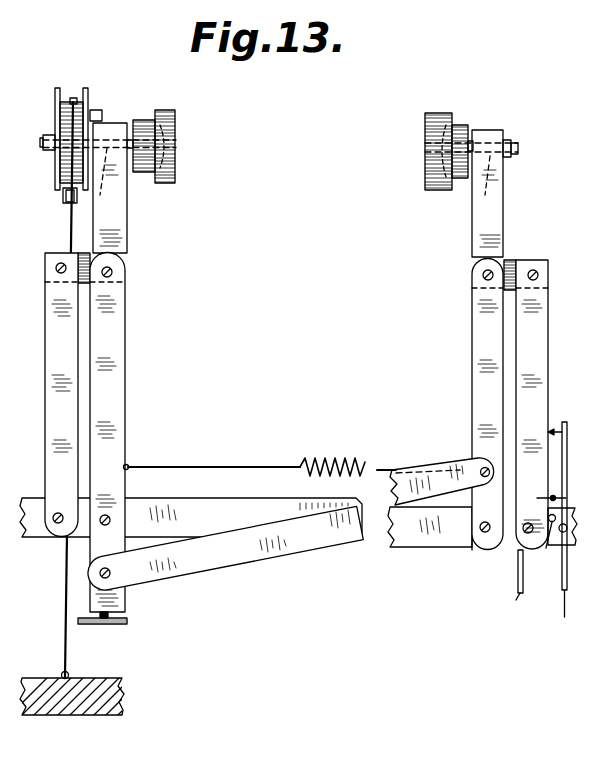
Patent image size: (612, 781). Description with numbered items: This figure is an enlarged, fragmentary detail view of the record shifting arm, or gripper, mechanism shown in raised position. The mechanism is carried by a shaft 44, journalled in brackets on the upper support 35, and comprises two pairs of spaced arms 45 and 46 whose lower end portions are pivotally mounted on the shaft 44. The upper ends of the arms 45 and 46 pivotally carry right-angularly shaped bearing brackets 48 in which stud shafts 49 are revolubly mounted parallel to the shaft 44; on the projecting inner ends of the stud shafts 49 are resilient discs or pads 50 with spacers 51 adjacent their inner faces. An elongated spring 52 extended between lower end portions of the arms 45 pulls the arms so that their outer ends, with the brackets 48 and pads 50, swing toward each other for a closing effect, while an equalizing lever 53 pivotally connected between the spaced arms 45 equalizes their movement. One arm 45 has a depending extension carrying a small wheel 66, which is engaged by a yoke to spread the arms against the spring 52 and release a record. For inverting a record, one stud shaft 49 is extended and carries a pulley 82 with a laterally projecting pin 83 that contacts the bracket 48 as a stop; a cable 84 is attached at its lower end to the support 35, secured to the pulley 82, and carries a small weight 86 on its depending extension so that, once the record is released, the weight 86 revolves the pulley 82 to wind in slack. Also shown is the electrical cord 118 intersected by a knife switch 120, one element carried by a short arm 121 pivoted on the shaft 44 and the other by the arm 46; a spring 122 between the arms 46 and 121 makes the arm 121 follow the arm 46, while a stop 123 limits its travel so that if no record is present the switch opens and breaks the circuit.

The upper support 35 is at (84, 705).
The shaft 44 is at (268, 508).
The gripper arm 45 is at (118, 390).
The gripper arm 46 is at (45, 426).
The bearing bracket 48 is at (122, 210).
The stud shaft 49 is at (299, 181).
The resilient disc or pad 50 is at (170, 112).
The spacer 51 is at (143, 121).
The spring 52 is at (353, 462).
The equalizing lever 53 is at (313, 546).
The small wheel 66 is at (120, 624).
The pulley 82 is at (58, 104).
The pin 83 is at (97, 110).
The cable 84 is at (63, 637).
The small weight 86 is at (63, 199).
The electrical cord or cable 118 is at (517, 568).
The knife switch 120 is at (549, 430).
The arm 121 is at (568, 448).
The spring 122 is at (553, 496).
The stop 123 is at (548, 546).